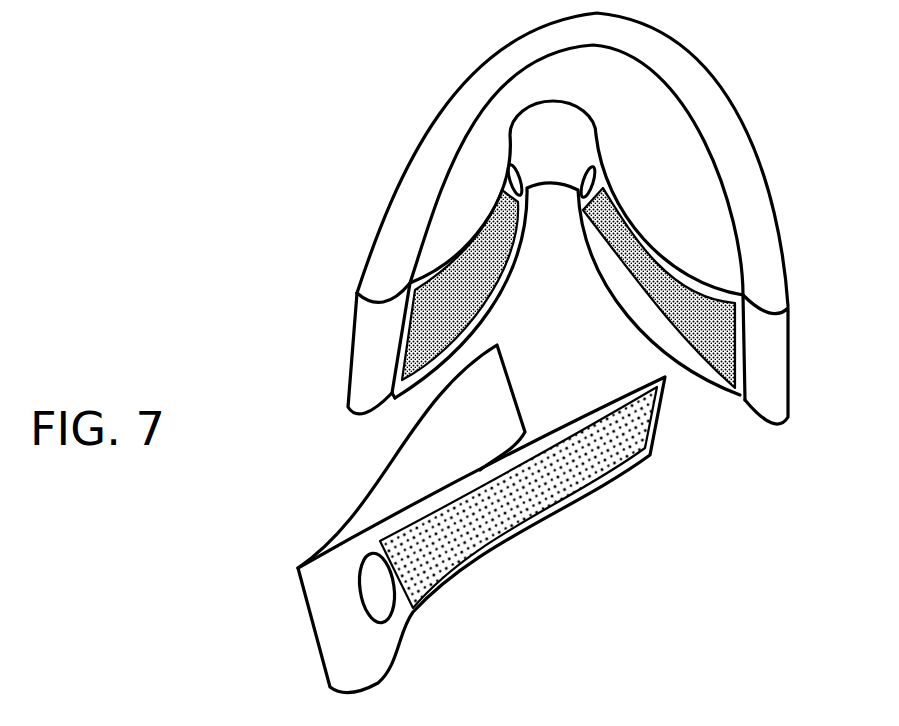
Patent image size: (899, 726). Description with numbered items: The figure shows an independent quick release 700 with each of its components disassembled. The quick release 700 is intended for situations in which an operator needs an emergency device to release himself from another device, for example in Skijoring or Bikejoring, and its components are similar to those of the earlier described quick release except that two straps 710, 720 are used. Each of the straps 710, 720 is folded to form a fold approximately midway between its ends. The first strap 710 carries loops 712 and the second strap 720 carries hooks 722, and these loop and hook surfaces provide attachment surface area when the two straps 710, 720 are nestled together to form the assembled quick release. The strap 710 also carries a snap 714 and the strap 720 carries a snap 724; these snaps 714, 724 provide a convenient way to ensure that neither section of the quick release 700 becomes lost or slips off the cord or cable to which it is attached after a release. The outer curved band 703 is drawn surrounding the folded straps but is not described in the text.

The quick release 700 is at (358, 62).
The headband 703 is at (717, 103).
The strap 710 is at (500, 302).
The loops 712 is at (650, 318).
The snap 714 is at (590, 175).
The strap 720 is at (512, 549).
The hooks 722 is at (573, 483).
The snap 724 is at (385, 597).